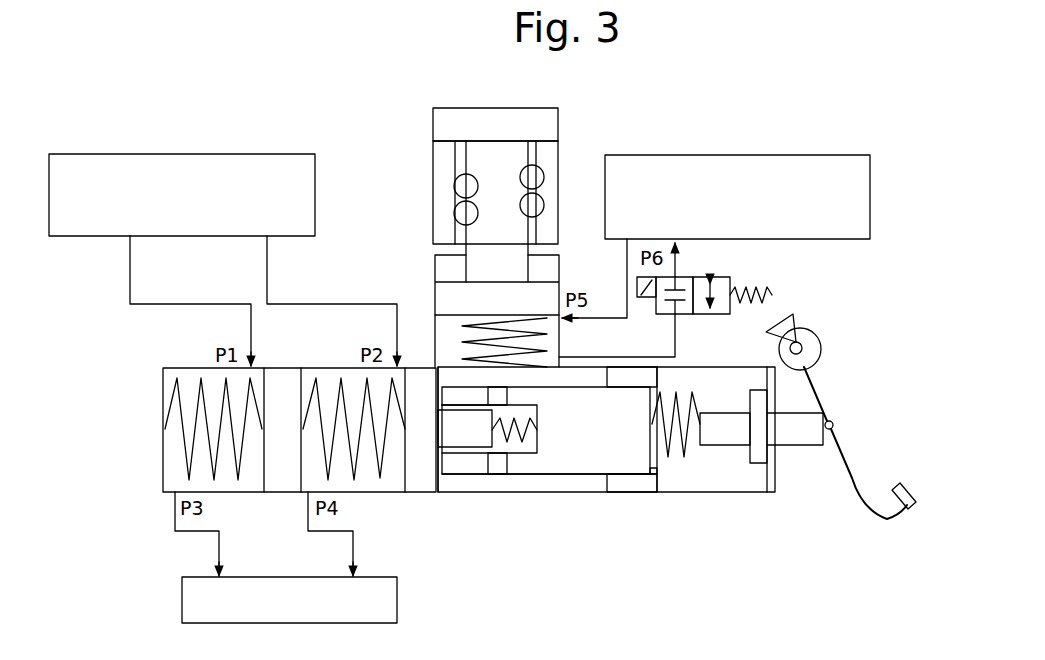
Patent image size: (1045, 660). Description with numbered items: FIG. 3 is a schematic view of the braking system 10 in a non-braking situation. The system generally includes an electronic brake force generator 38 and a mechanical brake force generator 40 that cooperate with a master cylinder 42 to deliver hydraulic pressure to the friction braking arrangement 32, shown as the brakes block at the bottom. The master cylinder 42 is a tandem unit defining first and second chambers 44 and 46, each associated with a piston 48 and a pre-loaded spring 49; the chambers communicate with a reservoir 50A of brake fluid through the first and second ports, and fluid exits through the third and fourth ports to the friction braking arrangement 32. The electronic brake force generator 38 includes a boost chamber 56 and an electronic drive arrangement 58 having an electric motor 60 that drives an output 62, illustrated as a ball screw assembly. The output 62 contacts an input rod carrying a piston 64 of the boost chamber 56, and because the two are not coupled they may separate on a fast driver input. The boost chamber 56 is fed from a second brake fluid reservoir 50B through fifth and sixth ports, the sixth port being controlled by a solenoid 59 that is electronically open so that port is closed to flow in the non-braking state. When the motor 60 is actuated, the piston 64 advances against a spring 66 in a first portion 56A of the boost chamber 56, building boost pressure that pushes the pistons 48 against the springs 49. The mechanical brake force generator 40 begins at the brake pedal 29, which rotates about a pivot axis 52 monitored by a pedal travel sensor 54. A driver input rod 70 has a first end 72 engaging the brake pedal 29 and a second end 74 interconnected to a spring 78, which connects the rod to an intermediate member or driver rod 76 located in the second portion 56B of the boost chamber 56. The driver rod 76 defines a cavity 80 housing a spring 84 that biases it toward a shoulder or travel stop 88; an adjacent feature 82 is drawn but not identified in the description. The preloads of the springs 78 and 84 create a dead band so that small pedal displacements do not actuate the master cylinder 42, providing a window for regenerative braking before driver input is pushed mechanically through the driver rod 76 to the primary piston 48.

The braking system 10 is at (755, 78).
The brake pedal 29 is at (850, 470).
The friction braking arrangement 32 is at (182, 597).
The electronic brake force generator 38 is at (446, 343).
The mechanical brake force generator 40 is at (660, 444).
The master cylinder 42 is at (270, 444).
The first chamber 44 is at (173, 482).
The second chamber 46 is at (393, 492).
The piston 48 is at (277, 492).
The pre-loaded spring 49 is at (178, 443).
The reservoir 50A is at (177, 154).
The brake fluid reservoir 50B is at (806, 155).
The pivot axis 52 is at (800, 340).
The pedal travel sensor 54 is at (822, 347).
The boost chamber 56 is at (447, 325).
The first portion of boost chamber 56A is at (445, 357).
The second portion of boost chamber 56B is at (545, 485).
The electronic drive arrangement 58 is at (487, 170).
The solenoid 59 is at (693, 277).
The electric motor 60 is at (558, 120).
The output 62 is at (487, 163).
The piston 64 is at (547, 297).
The spring 66 is at (487, 322).
The driver input rod 70 is at (807, 450).
The first end 72 is at (810, 417).
The second end 74 is at (720, 420).
The driver rod 76 is at (592, 475).
The spring 78 is at (680, 450).
The cavity 80 is at (515, 452).
The chamber 82 is at (457, 437).
The spring 84 is at (512, 420).
The travel stop 88 is at (660, 470).